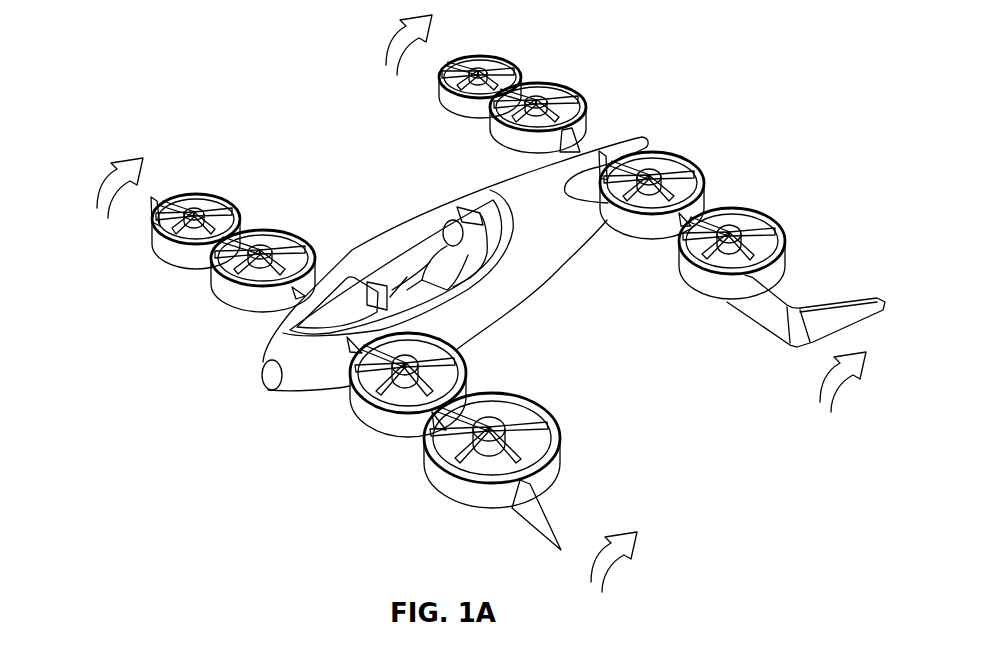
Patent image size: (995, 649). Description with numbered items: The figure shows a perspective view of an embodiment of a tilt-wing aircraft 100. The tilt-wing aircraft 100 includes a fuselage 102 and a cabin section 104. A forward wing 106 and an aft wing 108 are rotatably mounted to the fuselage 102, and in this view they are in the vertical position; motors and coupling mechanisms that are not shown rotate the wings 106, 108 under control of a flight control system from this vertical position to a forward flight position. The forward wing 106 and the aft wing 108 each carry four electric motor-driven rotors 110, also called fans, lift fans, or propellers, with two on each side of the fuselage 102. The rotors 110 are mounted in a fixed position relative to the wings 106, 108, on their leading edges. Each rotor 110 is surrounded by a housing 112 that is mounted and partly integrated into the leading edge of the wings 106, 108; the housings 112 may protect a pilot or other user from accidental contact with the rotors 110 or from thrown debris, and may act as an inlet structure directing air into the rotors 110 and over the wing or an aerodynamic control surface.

The tilt-wing aircraft 100 is at (115, 78).
The fuselage 102 is at (557, 277).
The cabin section 104 is at (393, 232).
The forward wing 106 is at (558, 521).
The aft wing 108 is at (840, 295).
The rotor 110 is at (452, 469).
The housing 112 is at (560, 441).